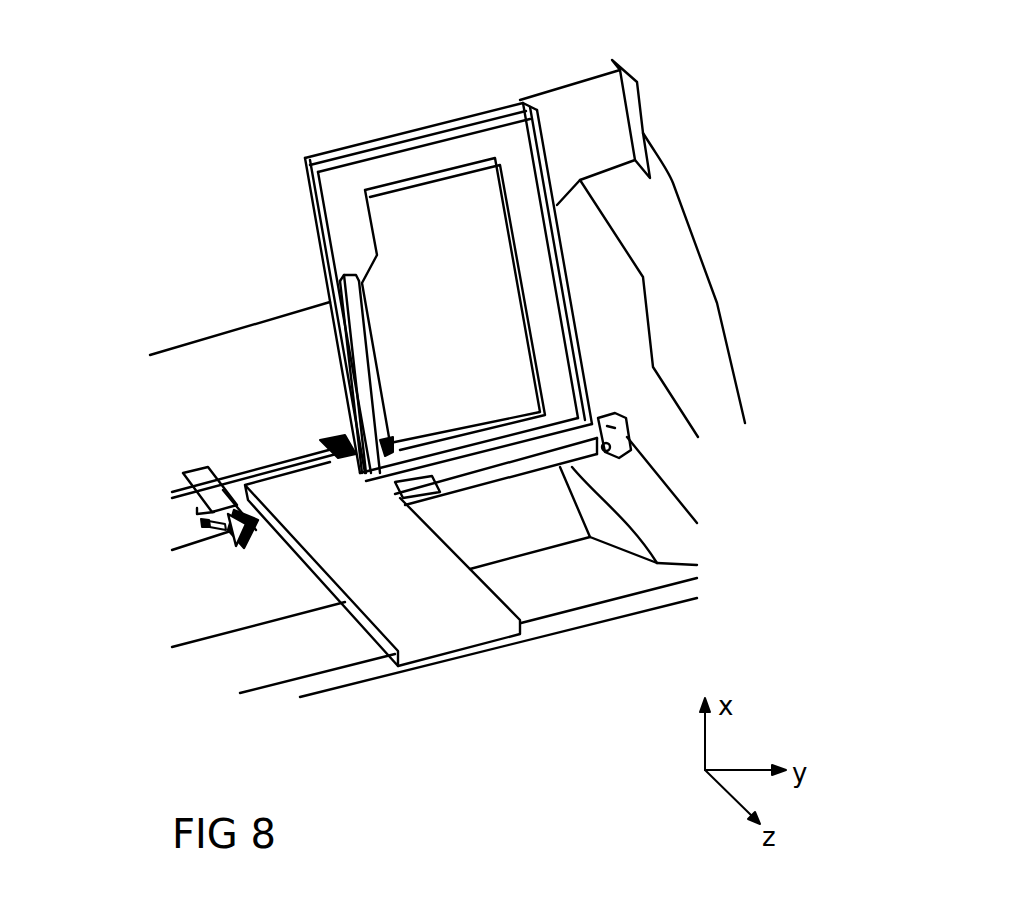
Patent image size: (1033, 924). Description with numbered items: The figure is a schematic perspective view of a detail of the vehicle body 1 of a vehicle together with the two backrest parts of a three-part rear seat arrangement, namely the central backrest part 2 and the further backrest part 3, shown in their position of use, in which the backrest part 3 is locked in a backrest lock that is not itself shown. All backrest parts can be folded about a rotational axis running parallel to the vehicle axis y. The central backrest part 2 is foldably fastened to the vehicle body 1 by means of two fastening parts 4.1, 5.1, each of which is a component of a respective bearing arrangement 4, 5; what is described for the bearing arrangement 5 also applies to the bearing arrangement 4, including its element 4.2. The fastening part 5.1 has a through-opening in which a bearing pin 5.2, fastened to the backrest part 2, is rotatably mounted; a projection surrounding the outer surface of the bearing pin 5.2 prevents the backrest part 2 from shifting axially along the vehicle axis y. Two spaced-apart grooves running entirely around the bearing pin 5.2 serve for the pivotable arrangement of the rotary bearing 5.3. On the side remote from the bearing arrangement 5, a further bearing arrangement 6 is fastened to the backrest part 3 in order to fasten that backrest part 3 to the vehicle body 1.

The vehicle body 1 is at (266, 110).
The central backrest part 2 is at (443, 620).
The further backrest part 3 is at (420, 160).
The bearing arrangement 4 is at (178, 473).
The fastening part 4.1 is at (200, 478).
The clamping screw 4.2 is at (210, 526).
The bearing arrangement 5 is at (340, 447).
The fastening part 5.1 is at (345, 440).
The bearing pin 5.2 is at (425, 494).
The rotary bearing 5.3 is at (388, 445).
The further bearing arrangement 6 is at (625, 440).